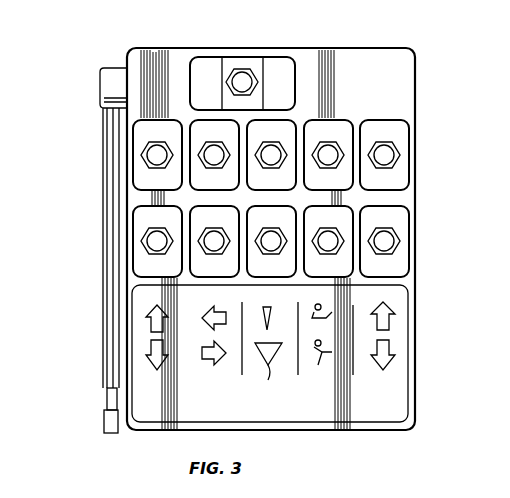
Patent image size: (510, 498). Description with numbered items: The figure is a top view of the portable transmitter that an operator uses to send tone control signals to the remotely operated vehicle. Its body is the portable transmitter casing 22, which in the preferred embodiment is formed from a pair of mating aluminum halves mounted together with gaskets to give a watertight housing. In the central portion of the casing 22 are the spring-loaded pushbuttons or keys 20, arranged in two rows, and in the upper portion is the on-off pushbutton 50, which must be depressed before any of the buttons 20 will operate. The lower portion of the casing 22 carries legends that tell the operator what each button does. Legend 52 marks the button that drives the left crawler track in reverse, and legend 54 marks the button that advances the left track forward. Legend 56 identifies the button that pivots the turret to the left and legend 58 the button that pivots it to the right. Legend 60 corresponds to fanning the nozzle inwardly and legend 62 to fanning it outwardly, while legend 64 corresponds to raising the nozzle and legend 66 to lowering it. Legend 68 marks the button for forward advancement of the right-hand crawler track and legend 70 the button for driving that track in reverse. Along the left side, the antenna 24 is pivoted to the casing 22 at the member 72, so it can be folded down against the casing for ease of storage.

The pushbuttons or keys 20 is at (140, 133).
The portable transmitter casing 22 is at (413, 60).
The antenna 24 is at (103, 255).
The on-off pushbutton 50 is at (270, 70).
The legend 52 is at (148, 352).
The legend 54 is at (148, 318).
The legend 56 is at (222, 312).
The legend 58 is at (210, 365).
The legend 60 is at (265, 320).
The legend 62 is at (268, 366).
The legend 64 is at (330, 315).
The legend 66 is at (325, 360).
The legend 68 is at (392, 325).
The legend 70 is at (383, 366).
The member 72 is at (103, 85).